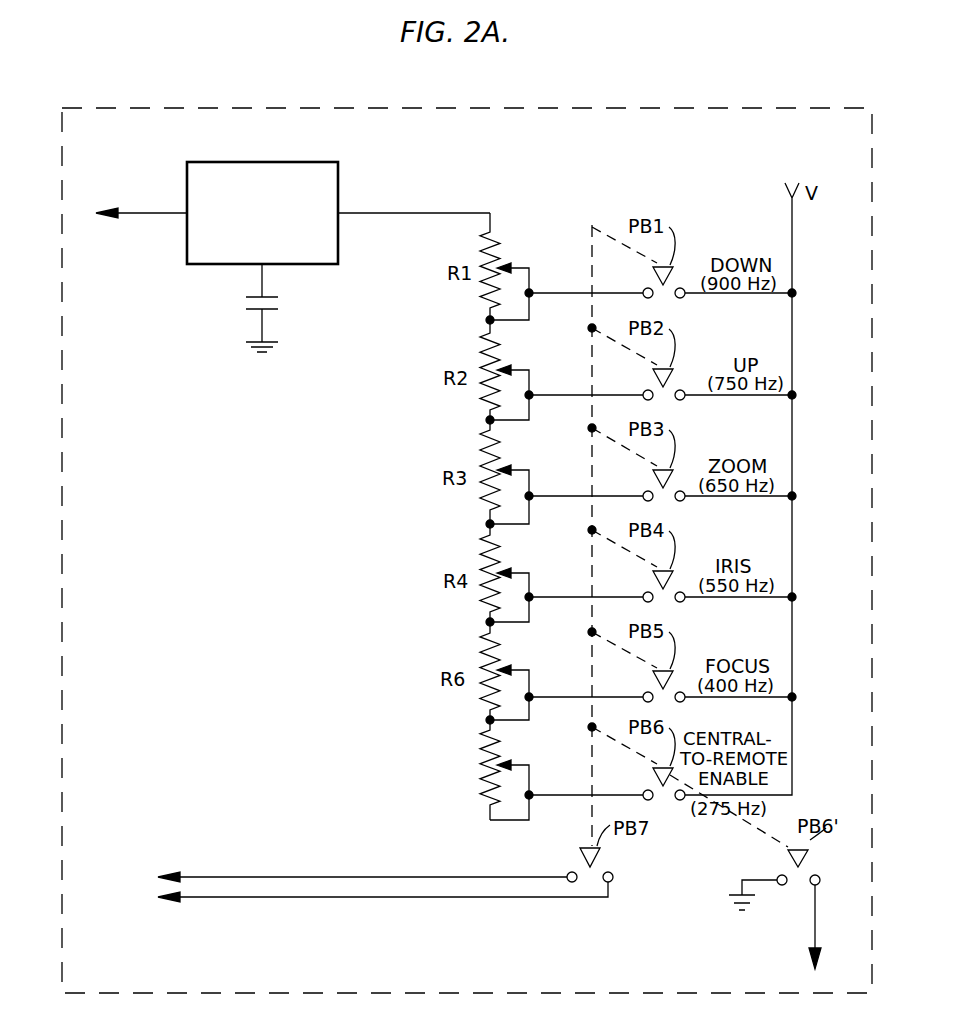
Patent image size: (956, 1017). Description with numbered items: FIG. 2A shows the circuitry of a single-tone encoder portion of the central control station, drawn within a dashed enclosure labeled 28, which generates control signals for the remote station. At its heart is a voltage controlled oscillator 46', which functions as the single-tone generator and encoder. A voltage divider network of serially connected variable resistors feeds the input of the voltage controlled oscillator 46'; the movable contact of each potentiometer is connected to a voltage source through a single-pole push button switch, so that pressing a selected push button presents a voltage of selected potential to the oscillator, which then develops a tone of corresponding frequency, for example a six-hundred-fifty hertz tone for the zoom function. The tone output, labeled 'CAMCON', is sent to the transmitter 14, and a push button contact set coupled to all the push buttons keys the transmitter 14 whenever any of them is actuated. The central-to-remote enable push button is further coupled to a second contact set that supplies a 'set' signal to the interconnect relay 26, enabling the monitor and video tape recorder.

The remote control station circuit 28 is at (783, 112).
The voltage controlled oscillator 46' is at (338, 257).
The transmitter (XMIT) 14 is at (337, 536).
The interconnect relay 26 is at (813, 922).